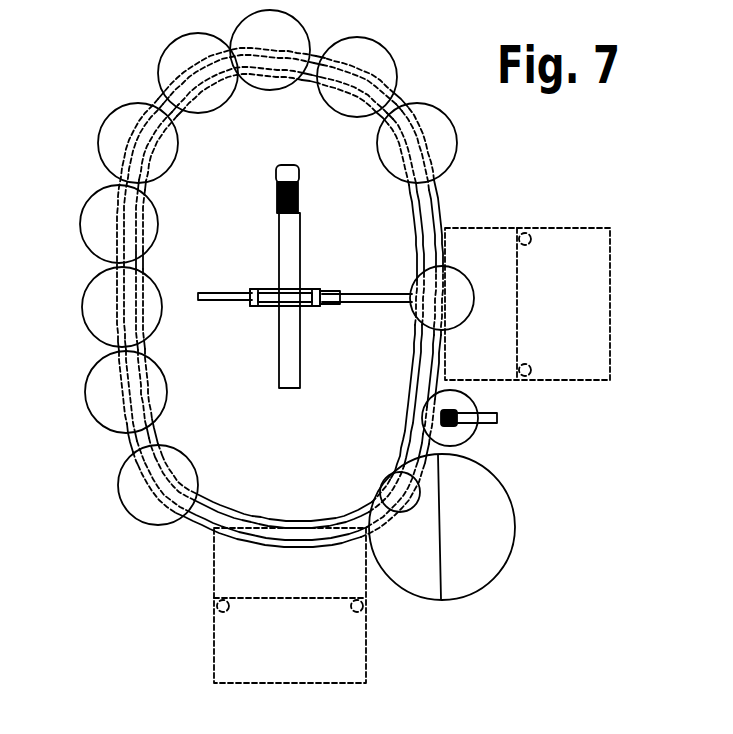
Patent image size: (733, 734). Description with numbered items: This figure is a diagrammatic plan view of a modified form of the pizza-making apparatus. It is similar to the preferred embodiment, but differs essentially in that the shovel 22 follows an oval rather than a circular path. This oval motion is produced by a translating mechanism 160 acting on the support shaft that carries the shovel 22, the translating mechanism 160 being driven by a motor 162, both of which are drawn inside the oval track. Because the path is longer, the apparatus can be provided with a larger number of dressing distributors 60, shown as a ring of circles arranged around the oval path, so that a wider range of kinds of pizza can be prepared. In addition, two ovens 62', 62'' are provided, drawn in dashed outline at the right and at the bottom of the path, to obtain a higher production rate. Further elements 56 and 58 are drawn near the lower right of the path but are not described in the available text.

The dressing distributors 60 is at (97, 207).
The shovel 22 is at (436, 300).
The translating mechanism 160 is at (288, 352).
The motor 162 is at (278, 193).
The pivot roller 58 is at (462, 435).
The drive wheel 56 is at (497, 540).
The oven 62'' is at (535, 263).
The oven 62' is at (239, 605).